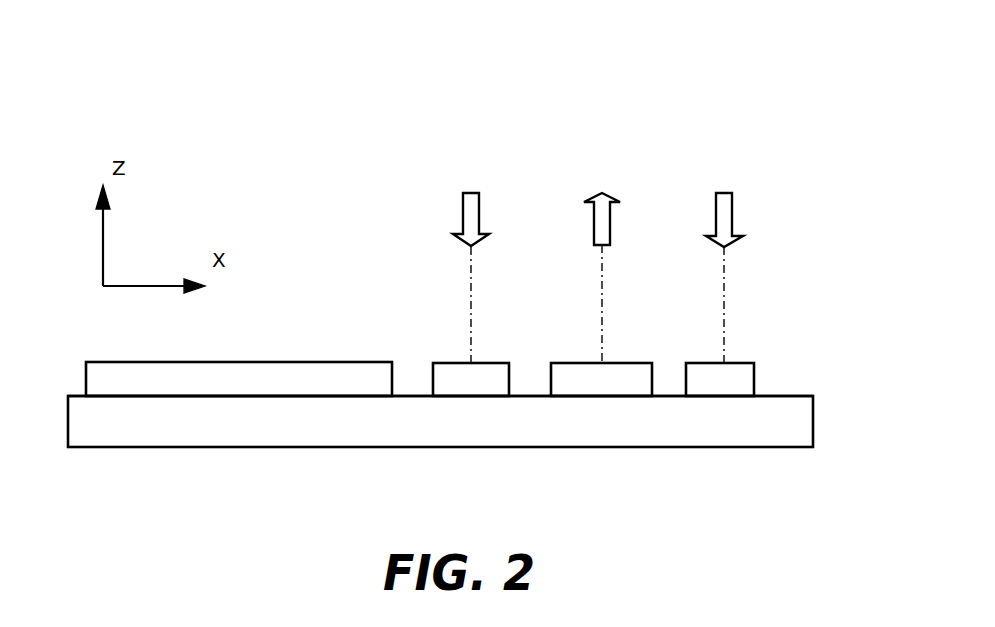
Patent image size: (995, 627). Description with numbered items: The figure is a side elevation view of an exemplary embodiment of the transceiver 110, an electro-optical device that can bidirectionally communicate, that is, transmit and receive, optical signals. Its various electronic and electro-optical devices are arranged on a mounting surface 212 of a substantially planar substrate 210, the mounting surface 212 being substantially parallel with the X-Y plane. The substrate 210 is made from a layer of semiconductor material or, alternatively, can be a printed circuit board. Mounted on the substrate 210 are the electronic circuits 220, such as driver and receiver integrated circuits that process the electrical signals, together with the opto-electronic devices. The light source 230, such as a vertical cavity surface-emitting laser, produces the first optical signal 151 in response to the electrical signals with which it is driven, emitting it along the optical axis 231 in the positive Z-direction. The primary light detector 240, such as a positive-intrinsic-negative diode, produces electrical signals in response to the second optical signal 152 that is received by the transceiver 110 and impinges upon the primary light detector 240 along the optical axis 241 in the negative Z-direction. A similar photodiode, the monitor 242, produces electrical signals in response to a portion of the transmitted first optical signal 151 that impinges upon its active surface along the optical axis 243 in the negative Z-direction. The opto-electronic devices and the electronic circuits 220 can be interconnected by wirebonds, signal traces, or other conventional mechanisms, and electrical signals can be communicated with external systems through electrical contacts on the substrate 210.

The transceiver 110 is at (703, 135).
The first optical signal 151 is at (473, 222).
The second optical signal 152 is at (728, 218).
The substrate 210 is at (803, 429).
The mounting surface 212 is at (778, 394).
The electronic circuits 220 is at (238, 362).
The light source 230 is at (637, 363).
The optical axis 231 is at (604, 288).
The primary light detector 240 is at (749, 363).
The optical axis 241 is at (726, 288).
The monitor 242 is at (482, 363).
The optical axis 243 is at (472, 288).